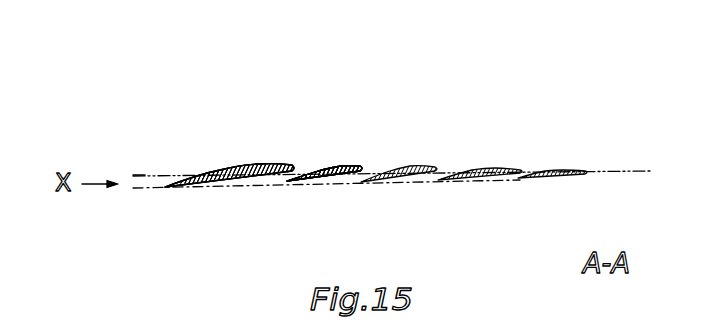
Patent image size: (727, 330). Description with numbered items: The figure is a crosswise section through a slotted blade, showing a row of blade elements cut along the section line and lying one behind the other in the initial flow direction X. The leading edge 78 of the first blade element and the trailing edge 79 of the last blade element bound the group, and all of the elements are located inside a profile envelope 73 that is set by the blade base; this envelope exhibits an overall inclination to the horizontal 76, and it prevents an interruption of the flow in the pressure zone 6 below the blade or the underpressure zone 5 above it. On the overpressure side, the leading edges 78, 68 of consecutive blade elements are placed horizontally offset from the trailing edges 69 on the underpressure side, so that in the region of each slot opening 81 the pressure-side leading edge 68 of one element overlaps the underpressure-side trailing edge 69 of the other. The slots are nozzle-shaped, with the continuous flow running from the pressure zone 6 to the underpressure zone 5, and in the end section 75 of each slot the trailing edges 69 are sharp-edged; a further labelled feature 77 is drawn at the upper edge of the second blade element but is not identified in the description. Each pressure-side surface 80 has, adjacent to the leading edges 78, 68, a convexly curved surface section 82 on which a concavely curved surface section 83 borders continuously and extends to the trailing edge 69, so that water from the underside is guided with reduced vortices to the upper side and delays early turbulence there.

The horizontal 76 is at (138, 174).
The leading edge of first blade element 78 is at (164, 198).
The convexly curved surface section 82 is at (198, 196).
The concavely curved surface section 83 is at (249, 187).
The trailing edge on underpressure side 69 is at (294, 163).
The end section of slot 75 is at (313, 162).
The blade leading edge 77 is at (340, 167).
The leading edge on pressure side 68 is at (287, 195).
The surface on pressure side 80 is at (333, 195).
The slot opening 81 is at (417, 195).
The profile envelope 73 is at (459, 161).
The trailing edge of last blade element 79 is at (587, 163).
The underpressure zone 5 is at (535, 120).
The pressure zone 6 is at (532, 216).